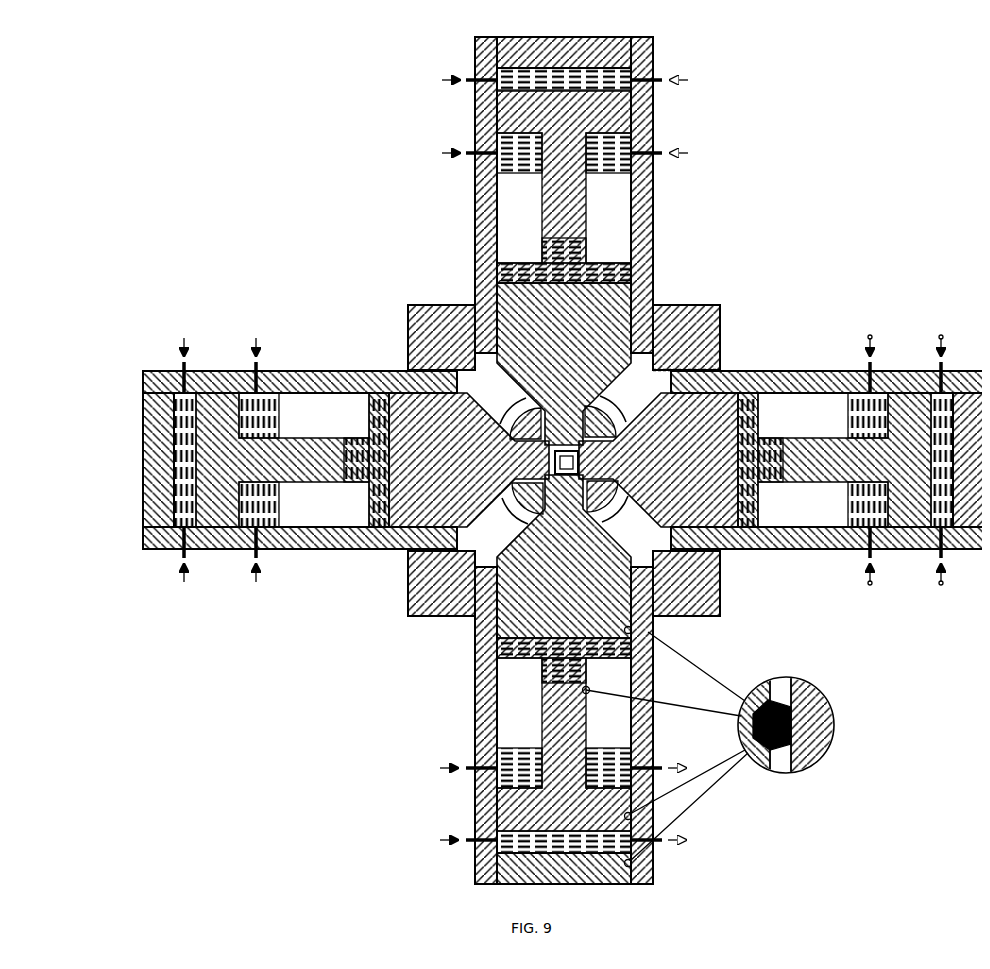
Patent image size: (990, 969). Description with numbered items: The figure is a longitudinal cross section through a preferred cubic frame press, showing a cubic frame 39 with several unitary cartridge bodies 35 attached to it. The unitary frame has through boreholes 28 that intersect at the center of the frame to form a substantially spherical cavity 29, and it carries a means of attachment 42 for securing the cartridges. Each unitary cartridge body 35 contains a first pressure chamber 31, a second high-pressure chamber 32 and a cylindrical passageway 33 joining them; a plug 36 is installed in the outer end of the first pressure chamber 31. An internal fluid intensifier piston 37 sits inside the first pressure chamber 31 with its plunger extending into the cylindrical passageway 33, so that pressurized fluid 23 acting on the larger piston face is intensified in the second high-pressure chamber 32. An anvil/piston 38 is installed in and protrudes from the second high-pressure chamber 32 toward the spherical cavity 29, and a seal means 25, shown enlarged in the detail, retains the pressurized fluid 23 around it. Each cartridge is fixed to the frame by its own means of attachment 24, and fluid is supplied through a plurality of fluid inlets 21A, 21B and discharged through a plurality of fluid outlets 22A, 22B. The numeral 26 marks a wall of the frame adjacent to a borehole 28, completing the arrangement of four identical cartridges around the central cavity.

The fluid inlet 21A is at (477, 833).
The fluid inlet 21B is at (480, 762).
The fluid outlet 22A is at (933, 354).
The fluid outlet 22B is at (862, 354).
The pressurized fluid 23 is at (475, 848).
The means of attachment 24 is at (660, 608).
The seal means 25 is at (780, 740).
The side wall 26 is at (700, 535).
The through borehole 28 is at (712, 364).
The substantially spherical cavity 29 is at (633, 358).
The first pressure chamber 31 is at (560, 820).
The second high-pressure chamber 32 is at (487, 649).
The cylindrical passageway 33 is at (580, 658).
The unitary cartridge body 35 is at (645, 622).
The plug 36 is at (643, 860).
The internal fluid intensifier piston 37 is at (553, 728).
The anvil/piston 38 is at (580, 567).
The cubic frame 39 is at (703, 297).
The means of attachment 42 is at (683, 360).